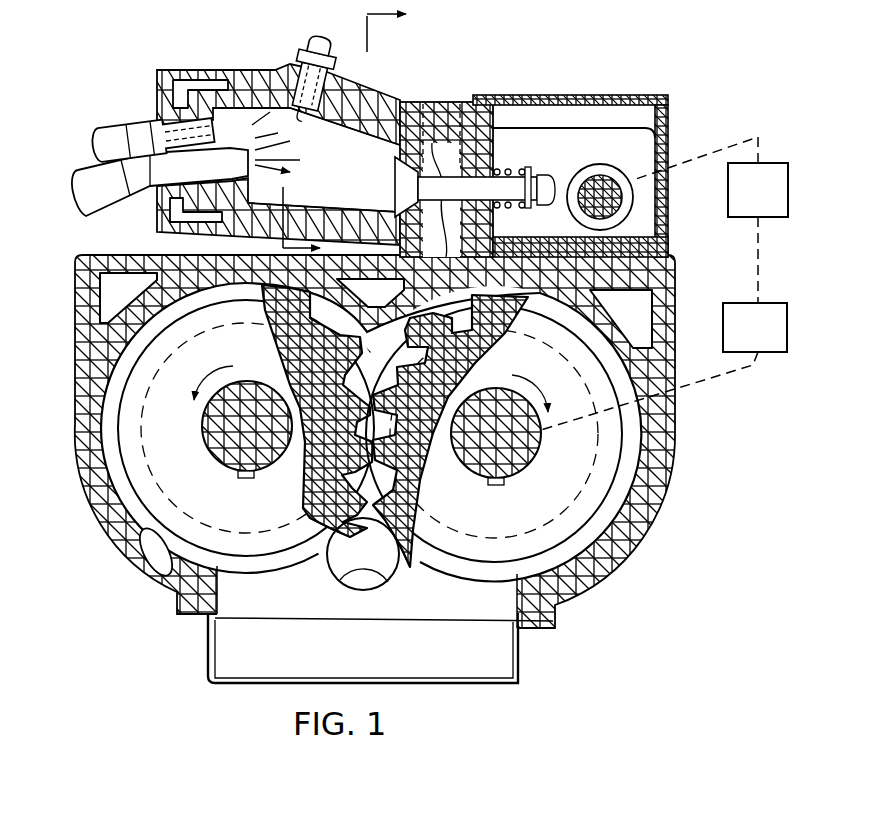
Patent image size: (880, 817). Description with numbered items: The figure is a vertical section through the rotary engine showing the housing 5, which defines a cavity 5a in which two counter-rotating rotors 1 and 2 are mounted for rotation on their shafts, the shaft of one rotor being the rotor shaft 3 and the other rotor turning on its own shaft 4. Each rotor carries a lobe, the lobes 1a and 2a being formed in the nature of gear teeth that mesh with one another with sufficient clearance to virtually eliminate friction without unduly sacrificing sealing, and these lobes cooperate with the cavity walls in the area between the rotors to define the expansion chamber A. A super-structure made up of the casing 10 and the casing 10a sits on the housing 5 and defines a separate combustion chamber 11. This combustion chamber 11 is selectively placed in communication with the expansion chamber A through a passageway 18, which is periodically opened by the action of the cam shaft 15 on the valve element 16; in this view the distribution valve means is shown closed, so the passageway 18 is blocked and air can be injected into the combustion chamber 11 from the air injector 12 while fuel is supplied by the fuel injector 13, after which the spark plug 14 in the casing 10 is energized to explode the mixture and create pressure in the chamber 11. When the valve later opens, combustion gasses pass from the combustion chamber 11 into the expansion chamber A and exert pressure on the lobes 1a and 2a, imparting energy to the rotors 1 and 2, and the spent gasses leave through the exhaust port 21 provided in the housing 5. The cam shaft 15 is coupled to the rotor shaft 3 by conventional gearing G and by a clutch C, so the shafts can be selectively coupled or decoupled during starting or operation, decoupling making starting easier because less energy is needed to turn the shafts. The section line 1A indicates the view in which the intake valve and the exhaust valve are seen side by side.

The rotor 1 is at (568, 505).
The lobe 1a is at (410, 553).
The rotor 2 is at (175, 480).
The lobe 2a is at (320, 548).
The rotor shaft 3 is at (535, 440).
The second rotor shaft 4 is at (203, 425).
The housing 5 is at (78, 298).
The cavity 5a is at (158, 576).
The super-structure 10 is at (243, 69).
The casing 10a is at (670, 117).
The combustion chamber 11 is at (353, 150).
The air injector 12 is at (90, 167).
The fuel injector 13 is at (133, 128).
The spark plug 14 is at (305, 45).
The cam shaft 15 is at (594, 165).
The valve element 16 is at (440, 132).
The passageway 18 is at (455, 237).
The exhaust port 21 is at (376, 583).
The section line 1A is at (329, 126).
The expansion chamber A is at (397, 347).
The gearing G is at (710, 220).
The clutch C is at (664, 366).